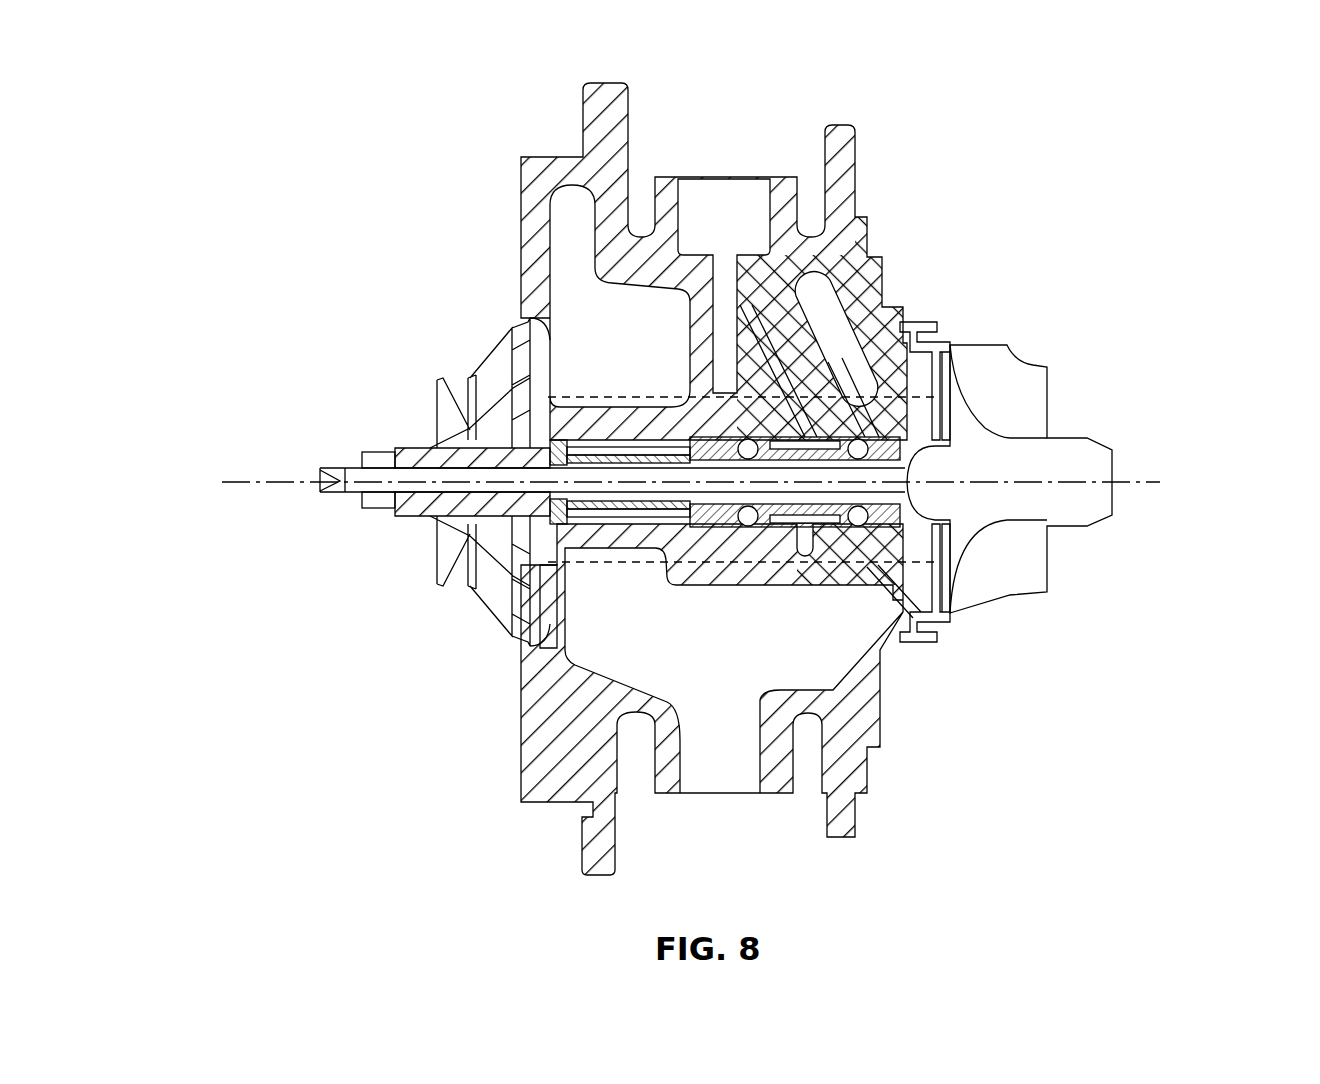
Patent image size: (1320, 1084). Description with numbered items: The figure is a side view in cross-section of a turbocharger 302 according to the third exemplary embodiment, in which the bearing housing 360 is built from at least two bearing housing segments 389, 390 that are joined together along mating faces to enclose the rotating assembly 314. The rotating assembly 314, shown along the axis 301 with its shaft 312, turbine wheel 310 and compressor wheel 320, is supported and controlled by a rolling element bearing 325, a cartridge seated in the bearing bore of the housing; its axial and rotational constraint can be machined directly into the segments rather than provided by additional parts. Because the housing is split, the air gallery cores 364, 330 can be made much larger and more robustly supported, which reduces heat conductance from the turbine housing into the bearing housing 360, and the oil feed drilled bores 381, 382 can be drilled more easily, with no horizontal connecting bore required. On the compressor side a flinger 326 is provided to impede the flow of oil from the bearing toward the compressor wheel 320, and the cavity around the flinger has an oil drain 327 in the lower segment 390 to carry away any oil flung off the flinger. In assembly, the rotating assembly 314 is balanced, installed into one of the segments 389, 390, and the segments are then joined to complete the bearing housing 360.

The rotational axis 301 is at (1135, 480).
The turbocharger 302 is at (1112, 221).
The turbine wheel 310 is at (1063, 498).
The shaft 312 is at (318, 481).
The rotating assembly 314 is at (370, 512).
The compressor wheel 320 is at (487, 443).
The rolling element bearing 325 is at (948, 612).
The flinger 326 is at (535, 593).
The oil drain 327 is at (697, 588).
The air gallery core 330 is at (583, 273).
The bearing housing 360 is at (858, 168).
The air gallery core 364 is at (832, 327).
The oil feed drilled bore 381 is at (800, 380).
The oil feed drilled bore 382 is at (737, 383).
The bearing housing segment 389 is at (545, 215).
The bearing housing segment 390 is at (537, 733).